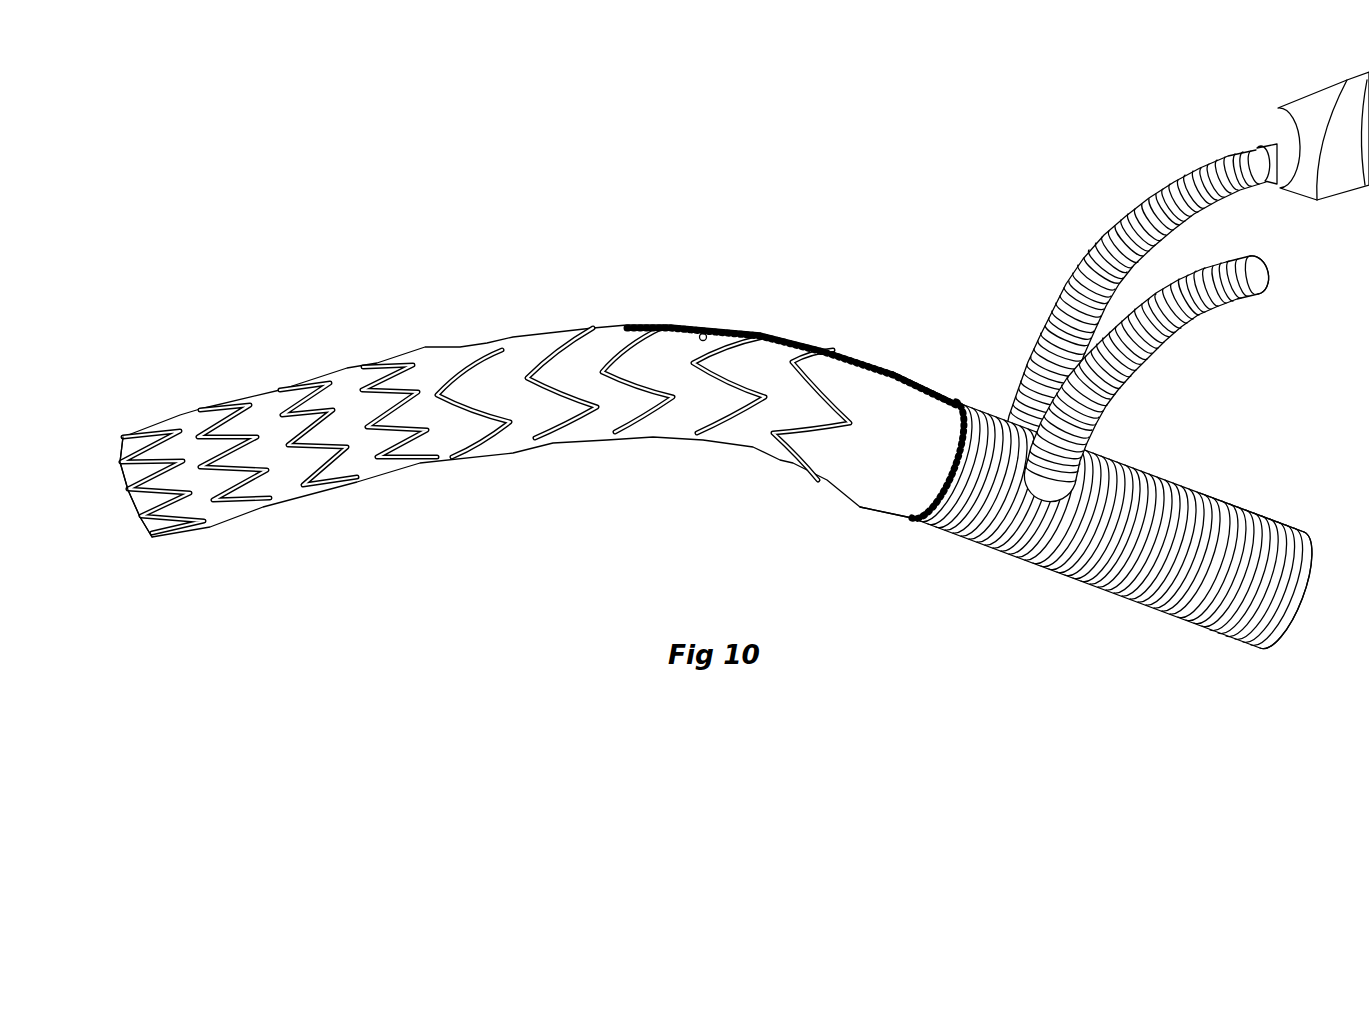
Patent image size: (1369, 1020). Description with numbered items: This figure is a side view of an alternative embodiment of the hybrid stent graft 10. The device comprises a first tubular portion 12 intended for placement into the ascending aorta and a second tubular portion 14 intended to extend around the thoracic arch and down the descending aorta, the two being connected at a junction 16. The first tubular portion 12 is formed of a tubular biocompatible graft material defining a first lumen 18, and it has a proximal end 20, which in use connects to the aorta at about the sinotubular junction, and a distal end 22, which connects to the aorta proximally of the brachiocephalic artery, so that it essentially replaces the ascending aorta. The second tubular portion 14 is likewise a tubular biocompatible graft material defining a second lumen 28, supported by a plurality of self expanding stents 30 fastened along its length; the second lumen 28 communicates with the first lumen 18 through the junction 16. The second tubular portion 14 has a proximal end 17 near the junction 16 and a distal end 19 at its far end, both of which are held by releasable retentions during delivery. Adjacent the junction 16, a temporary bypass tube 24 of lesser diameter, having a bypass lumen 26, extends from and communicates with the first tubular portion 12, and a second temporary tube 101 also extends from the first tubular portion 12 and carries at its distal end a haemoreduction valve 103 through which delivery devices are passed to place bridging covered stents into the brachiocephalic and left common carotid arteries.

The hybrid stent graft 10 is at (539, 440).
The first tubular portion 12 is at (994, 498).
The second tubular portion 14 is at (520, 432).
The junction 16 is at (903, 520).
The proximal end of the second tubular portion 17 is at (937, 358).
The first lumen 18 is at (1307, 600).
The distal end of the second tubular portion 19 is at (178, 507).
The proximal end of the first tubular portion 20 is at (1312, 560).
The distal end of the first tubular portion 22 is at (962, 502).
The temporary bypass tube 24 is at (1191, 379).
The bypass lumen 26 is at (1278, 268).
The second lumen 28 is at (121, 496).
The self expanding stents 30 is at (573, 448).
The second temporary tube 101 is at (1110, 258).
The haemoreduction valve 103 is at (1322, 104).